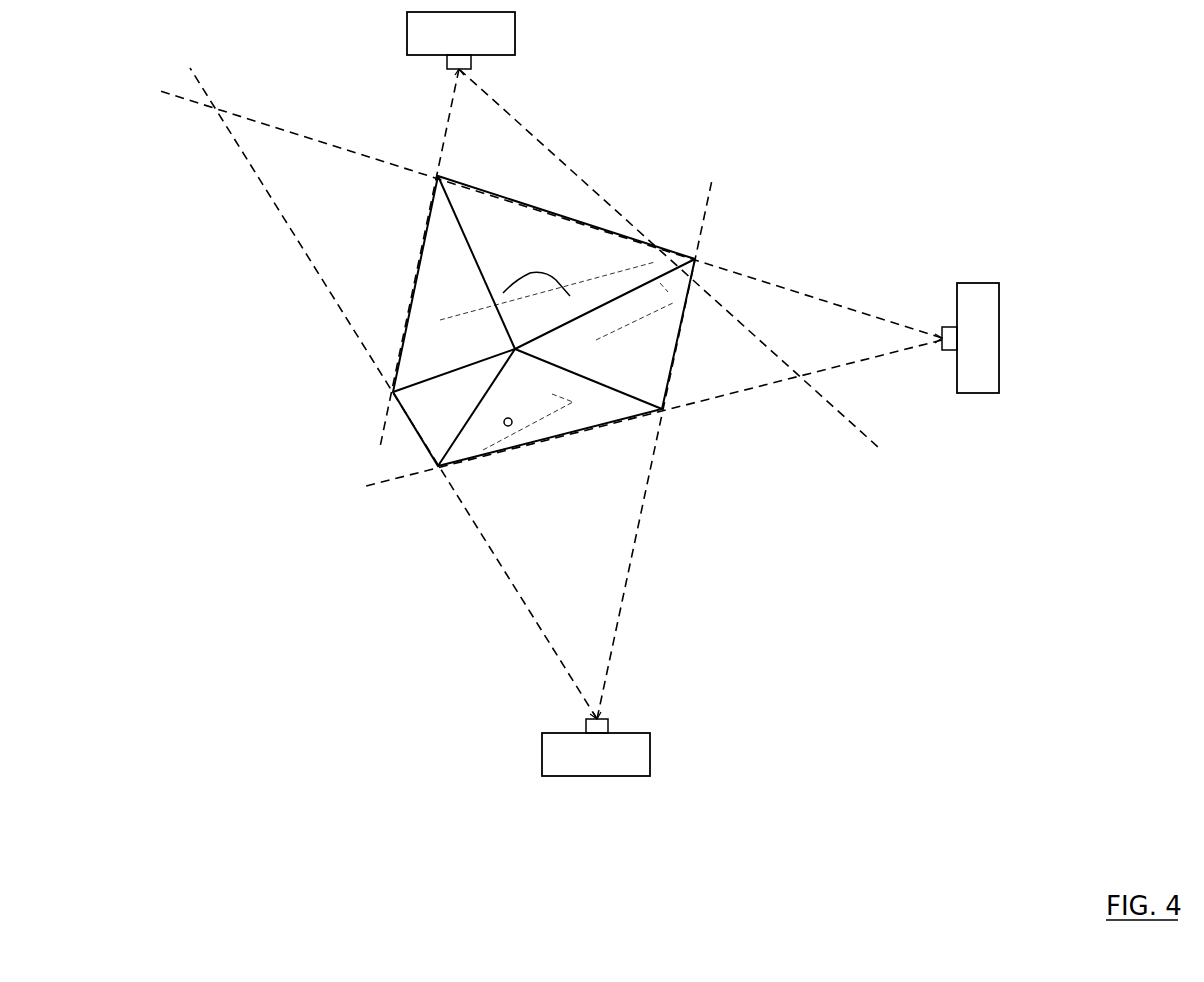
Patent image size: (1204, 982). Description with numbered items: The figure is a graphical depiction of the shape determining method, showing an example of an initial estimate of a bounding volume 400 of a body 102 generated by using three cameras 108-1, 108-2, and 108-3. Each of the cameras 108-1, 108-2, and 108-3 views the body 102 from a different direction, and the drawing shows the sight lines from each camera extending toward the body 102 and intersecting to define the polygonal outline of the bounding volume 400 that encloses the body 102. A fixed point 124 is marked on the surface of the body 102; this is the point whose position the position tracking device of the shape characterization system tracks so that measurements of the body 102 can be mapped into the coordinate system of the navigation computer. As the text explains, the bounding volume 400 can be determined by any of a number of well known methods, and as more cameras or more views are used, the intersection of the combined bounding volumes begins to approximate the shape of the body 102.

The camera 108-1 is at (560, 779).
The camera 108-2 is at (1000, 393).
The camera 108-3 is at (519, 38).
The body 102 is at (497, 291).
The fixed point 124 is at (513, 431).
The bounding volume 400 is at (392, 340).